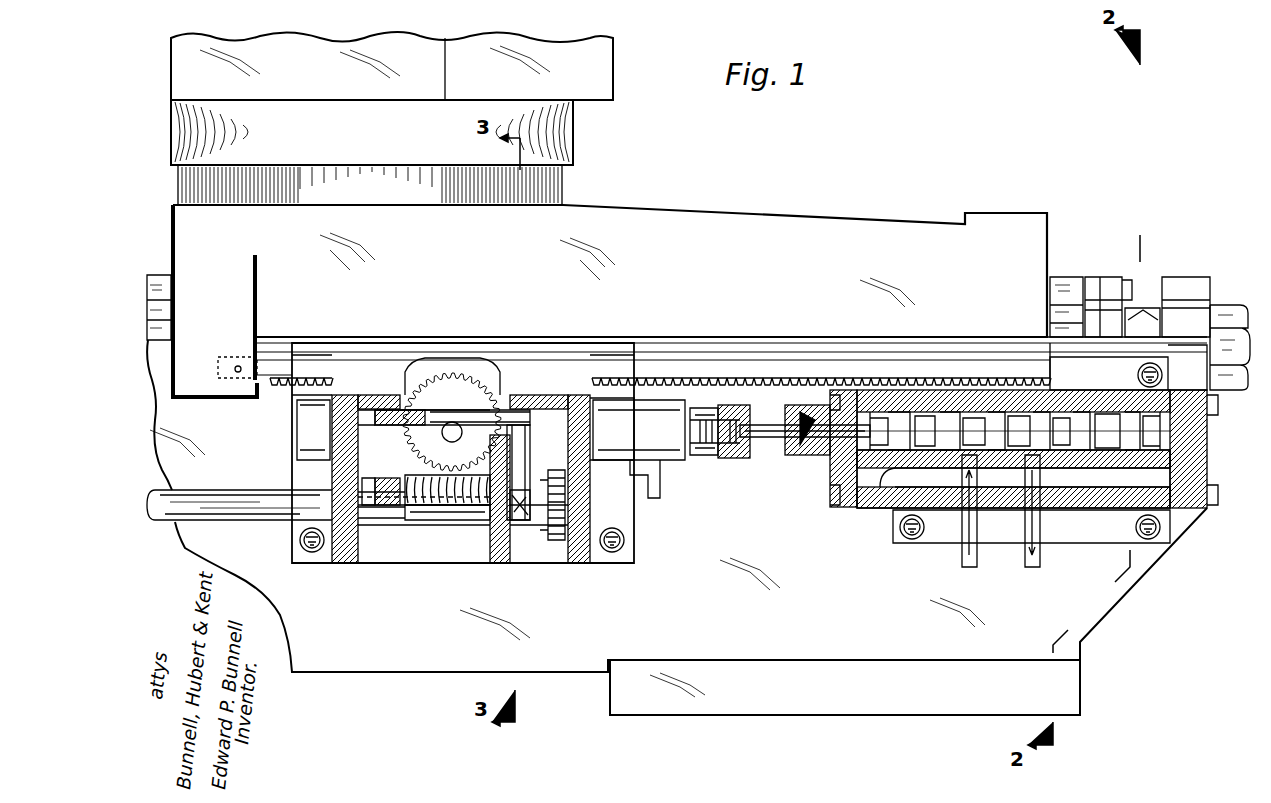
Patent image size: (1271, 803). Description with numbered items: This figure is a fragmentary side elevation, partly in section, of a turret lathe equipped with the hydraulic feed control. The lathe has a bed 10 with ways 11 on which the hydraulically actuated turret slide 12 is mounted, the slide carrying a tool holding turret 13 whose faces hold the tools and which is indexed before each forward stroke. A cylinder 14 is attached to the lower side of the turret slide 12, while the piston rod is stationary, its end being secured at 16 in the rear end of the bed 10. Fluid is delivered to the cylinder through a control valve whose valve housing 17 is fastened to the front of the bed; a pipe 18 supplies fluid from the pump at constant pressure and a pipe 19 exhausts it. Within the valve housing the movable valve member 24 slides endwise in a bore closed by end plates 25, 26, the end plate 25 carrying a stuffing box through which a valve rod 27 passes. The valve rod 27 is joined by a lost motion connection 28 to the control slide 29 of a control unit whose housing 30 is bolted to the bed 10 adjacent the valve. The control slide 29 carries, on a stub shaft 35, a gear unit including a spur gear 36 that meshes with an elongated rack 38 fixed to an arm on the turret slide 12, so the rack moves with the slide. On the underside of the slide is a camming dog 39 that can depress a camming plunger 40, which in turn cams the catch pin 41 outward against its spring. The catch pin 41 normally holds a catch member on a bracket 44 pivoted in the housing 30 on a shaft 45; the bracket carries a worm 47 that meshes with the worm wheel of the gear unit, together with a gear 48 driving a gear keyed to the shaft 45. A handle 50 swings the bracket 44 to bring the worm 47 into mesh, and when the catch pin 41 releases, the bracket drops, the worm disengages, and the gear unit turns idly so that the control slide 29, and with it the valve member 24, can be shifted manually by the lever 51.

The bed 10 is at (435, 655).
The ways 11 is at (152, 275).
The turret slide 12 is at (750, 228).
The tool holding turret 13 is at (600, 62).
The cylinder 14 is at (1095, 280).
The piston rod securing point 16 is at (1215, 305).
The valve housing 17 is at (1065, 393).
The supply pipe 18 is at (962, 558).
The exhaust pipe 19 is at (1040, 555).
The movable valve member 24 is at (875, 462).
The end plate 25 is at (835, 465).
The end plate 26 is at (1200, 470).
The valve rod 27 is at (766, 438).
The lost motion connection 28 is at (712, 445).
The control slide 29 is at (693, 418).
The housing 30 is at (585, 565).
The stub shaft 35 is at (452, 443).
The spur gear 36 is at (422, 447).
The rack 38 is at (775, 360).
The camming dog 39 is at (478, 408).
The camming plunger 40 is at (530, 445).
The catch pin 41 is at (515, 563).
The bracket 44 is at (436, 560).
The shaft 45 is at (230, 490).
The worm 47 is at (440, 520).
The gear 48 is at (552, 563).
The handle 50 is at (392, 512).
The lever 51 is at (650, 492).